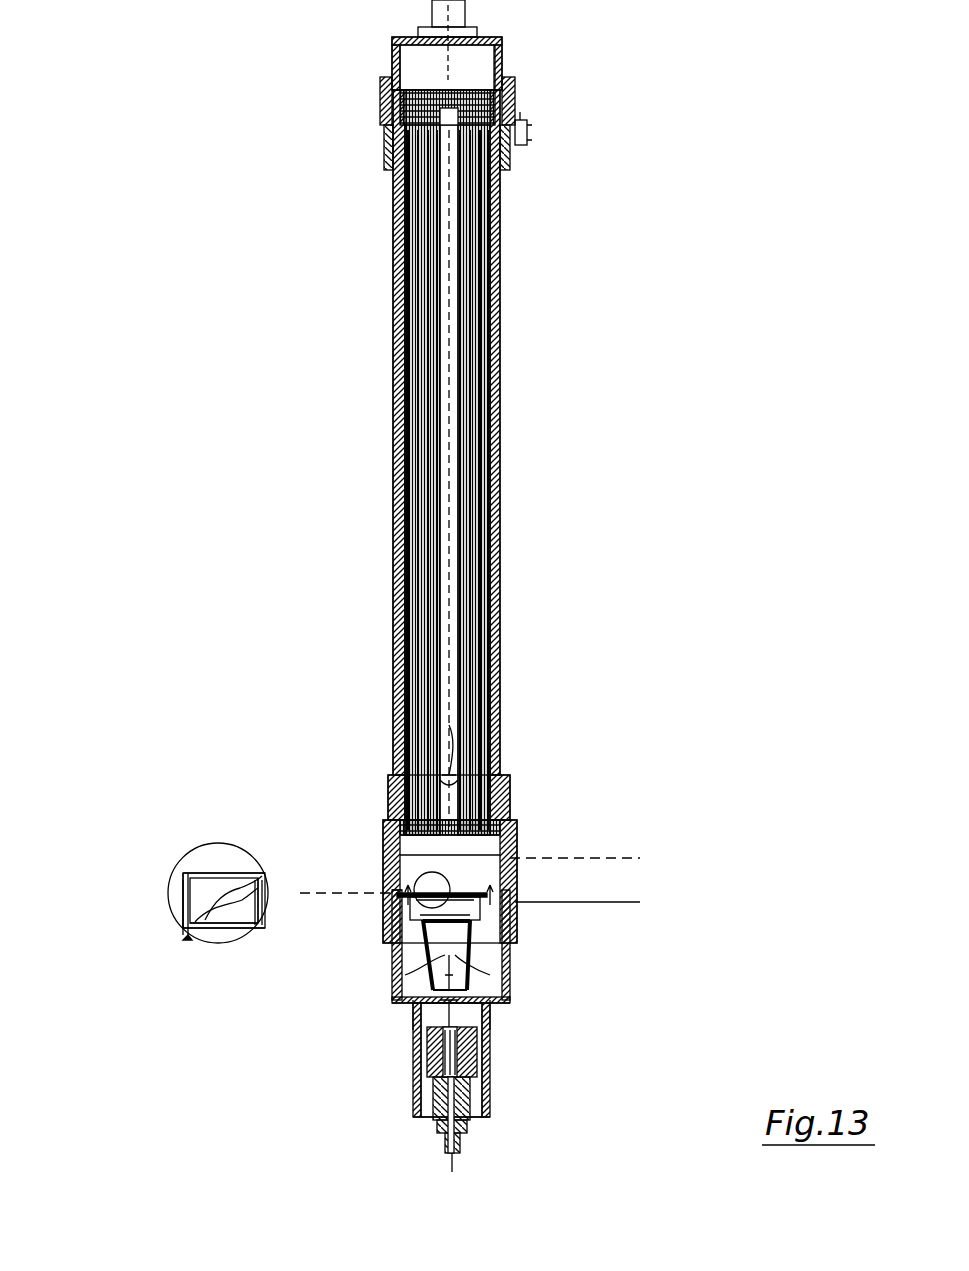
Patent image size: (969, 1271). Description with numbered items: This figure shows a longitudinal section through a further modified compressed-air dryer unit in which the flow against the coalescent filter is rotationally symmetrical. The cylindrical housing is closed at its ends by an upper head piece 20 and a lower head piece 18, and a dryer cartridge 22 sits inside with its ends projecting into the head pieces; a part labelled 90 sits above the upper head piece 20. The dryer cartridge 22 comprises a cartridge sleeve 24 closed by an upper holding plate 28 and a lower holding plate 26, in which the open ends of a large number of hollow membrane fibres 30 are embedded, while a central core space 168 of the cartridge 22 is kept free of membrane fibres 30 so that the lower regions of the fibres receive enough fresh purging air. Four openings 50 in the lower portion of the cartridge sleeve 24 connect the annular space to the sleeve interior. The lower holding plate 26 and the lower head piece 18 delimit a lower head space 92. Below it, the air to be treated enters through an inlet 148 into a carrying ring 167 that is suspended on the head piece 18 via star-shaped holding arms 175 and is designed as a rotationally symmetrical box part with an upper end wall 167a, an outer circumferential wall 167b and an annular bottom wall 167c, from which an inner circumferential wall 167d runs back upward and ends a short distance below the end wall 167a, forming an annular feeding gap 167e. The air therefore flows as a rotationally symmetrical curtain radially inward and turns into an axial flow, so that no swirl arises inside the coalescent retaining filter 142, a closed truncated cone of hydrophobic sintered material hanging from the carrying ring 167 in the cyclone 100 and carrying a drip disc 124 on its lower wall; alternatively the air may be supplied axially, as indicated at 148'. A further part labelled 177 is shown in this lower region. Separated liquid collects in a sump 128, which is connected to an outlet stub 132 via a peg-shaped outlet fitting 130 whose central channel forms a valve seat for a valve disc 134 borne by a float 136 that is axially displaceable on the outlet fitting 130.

The connector 90 is at (430, 18).
The upper head piece 20 is at (383, 66).
The holding plate 28 is at (395, 190).
The hollow membrane fibres 30 is at (395, 245).
The dryer cartridge 22 is at (385, 335).
The cartridge sleeve 24 is at (393, 455).
The central core space 168 is at (452, 572).
The openings 50 is at (455, 720).
The lower head space 92 is at (505, 805).
The lower head piece 18 is at (380, 830).
The lower holding plate 26 is at (380, 852).
The axial air supply 148' is at (529, 857).
The inlet 148 is at (635, 886).
The carrying ring 167 is at (515, 895).
The upper end wall 167a is at (215, 860).
The outer circumferential wall 167b is at (178, 893).
The annular feeding gap 167e is at (190, 922).
The annular bottom wall 167c is at (195, 945).
The inner circumferential wall 167d is at (225, 930).
The holding arms 175 is at (397, 905).
The cup bottom 177 is at (425, 968).
The cyclone 100 is at (395, 985).
The retaining filter 142 is at (475, 970).
The drip disc 124 is at (503, 970).
The valve disc 134 is at (475, 1012).
The sump 128 is at (490, 1030).
The float 136 is at (480, 1053).
The outlet fitting 130 is at (430, 1090).
The outlet stub 132 is at (435, 1140).